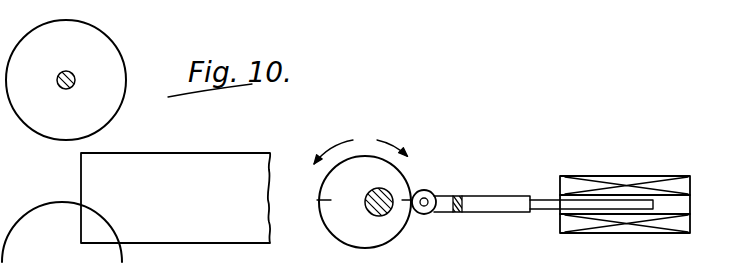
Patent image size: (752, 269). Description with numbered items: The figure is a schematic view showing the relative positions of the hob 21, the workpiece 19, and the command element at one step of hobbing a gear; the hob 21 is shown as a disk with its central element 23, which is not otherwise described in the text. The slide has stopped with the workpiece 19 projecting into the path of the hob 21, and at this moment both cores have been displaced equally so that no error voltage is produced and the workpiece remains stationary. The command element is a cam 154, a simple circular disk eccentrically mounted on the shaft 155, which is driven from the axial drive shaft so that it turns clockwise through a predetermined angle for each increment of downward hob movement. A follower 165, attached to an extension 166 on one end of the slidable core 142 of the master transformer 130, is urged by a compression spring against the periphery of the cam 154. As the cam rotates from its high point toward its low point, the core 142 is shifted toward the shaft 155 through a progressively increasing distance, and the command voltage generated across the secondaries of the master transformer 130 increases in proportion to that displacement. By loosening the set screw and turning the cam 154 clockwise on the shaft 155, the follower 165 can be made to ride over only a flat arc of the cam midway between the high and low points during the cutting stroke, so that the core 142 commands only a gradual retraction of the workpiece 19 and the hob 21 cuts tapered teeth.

The workpiece 19 is at (205, 166).
The hob 21 is at (114, 53).
The shaft of wheel 23 is at (62, 71).
The master transformer 130 is at (629, 174).
The slidable core 142 is at (547, 209).
The cam 154 is at (347, 232).
The shaft 155 is at (379, 217).
The follower 165 is at (432, 213).
The extension 166 is at (499, 200).